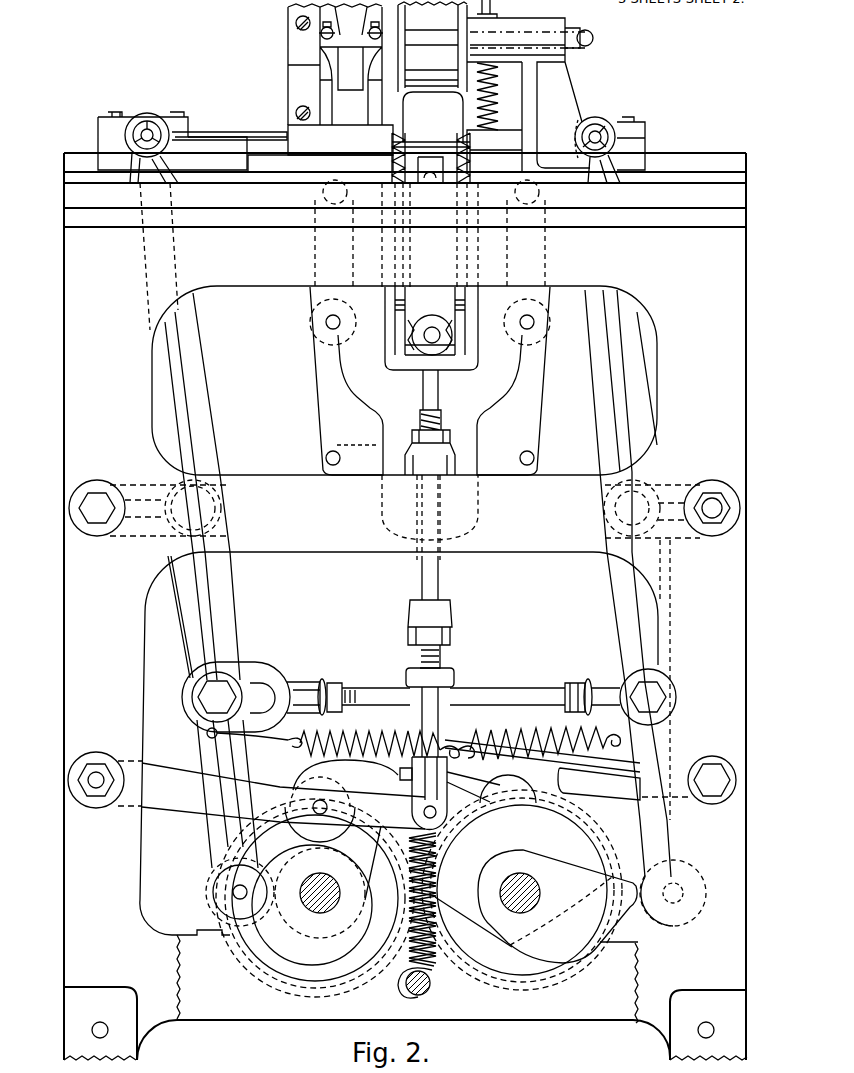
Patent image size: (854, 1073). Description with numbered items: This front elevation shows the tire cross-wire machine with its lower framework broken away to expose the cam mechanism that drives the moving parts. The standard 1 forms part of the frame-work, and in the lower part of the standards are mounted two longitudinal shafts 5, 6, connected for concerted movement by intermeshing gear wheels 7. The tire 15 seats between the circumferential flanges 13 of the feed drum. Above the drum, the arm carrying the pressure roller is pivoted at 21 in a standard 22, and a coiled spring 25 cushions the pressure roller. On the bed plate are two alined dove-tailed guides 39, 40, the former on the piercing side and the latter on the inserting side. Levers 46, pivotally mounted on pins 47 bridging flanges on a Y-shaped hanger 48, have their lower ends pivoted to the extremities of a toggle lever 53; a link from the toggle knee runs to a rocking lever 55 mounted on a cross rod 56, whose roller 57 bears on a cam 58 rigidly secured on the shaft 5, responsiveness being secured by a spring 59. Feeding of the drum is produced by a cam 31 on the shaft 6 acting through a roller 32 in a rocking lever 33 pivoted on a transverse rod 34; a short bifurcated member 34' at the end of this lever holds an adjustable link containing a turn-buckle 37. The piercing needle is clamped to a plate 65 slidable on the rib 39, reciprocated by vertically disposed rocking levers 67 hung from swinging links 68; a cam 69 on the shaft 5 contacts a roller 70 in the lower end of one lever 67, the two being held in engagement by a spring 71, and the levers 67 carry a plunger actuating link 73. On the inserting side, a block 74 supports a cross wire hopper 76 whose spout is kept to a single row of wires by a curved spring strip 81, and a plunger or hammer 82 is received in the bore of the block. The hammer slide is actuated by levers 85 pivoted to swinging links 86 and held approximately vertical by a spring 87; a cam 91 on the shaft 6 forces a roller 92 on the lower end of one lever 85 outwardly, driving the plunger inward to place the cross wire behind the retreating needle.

The standard 1 is at (733, 363).
The dove-tailed guide 39 is at (693, 163).
The plunger or hammer 82 is at (213, 132).
The dove-tailed guide 40 is at (282, 167).
The block 74 is at (296, 142).
The cross wire hopper 76 is at (296, 43).
The curved spring metal strip 81 is at (352, 78).
The tire 15 is at (432, 72).
The coiled spring 25 is at (495, 100).
The standard 22 is at (563, 100).
The pivot 21 is at (596, 32).
The plate 65 is at (645, 148).
The levers 85 is at (213, 412).
The levers 46 is at (325, 412).
The pins 47 is at (326, 325).
The Y-shaped hanger 48 is at (504, 381).
The circumferential flanges 13 is at (462, 343).
The toggle lever 53 is at (498, 463).
The swinging links 86 is at (150, 500).
The swinging links 68 is at (672, 502).
The rocking levers 67 is at (628, 812).
The roller 70 is at (652, 880).
The plunger actuating link 73 is at (353, 705).
The turn-buckle 37 is at (452, 603).
The spring 87 is at (345, 735).
The spring 71 is at (510, 735).
The rocking lever 55 is at (458, 736).
The bifurcated member 34' is at (473, 787).
The roller 57 is at (517, 812).
The transverse rod 34 is at (79, 780).
The rocking lever 33 is at (283, 796).
The cam 91 is at (344, 787).
The roller 32 is at (292, 832).
The cross rod 56 is at (718, 778).
The roller 92 is at (212, 882).
The cam 31 is at (315, 898).
The gear wheels 7 is at (482, 990).
The shaft 6 is at (340, 898).
The cam 58 is at (522, 890).
The cam 69 is at (536, 906).
The shaft 5 is at (543, 890).
The spring 59 is at (432, 958).